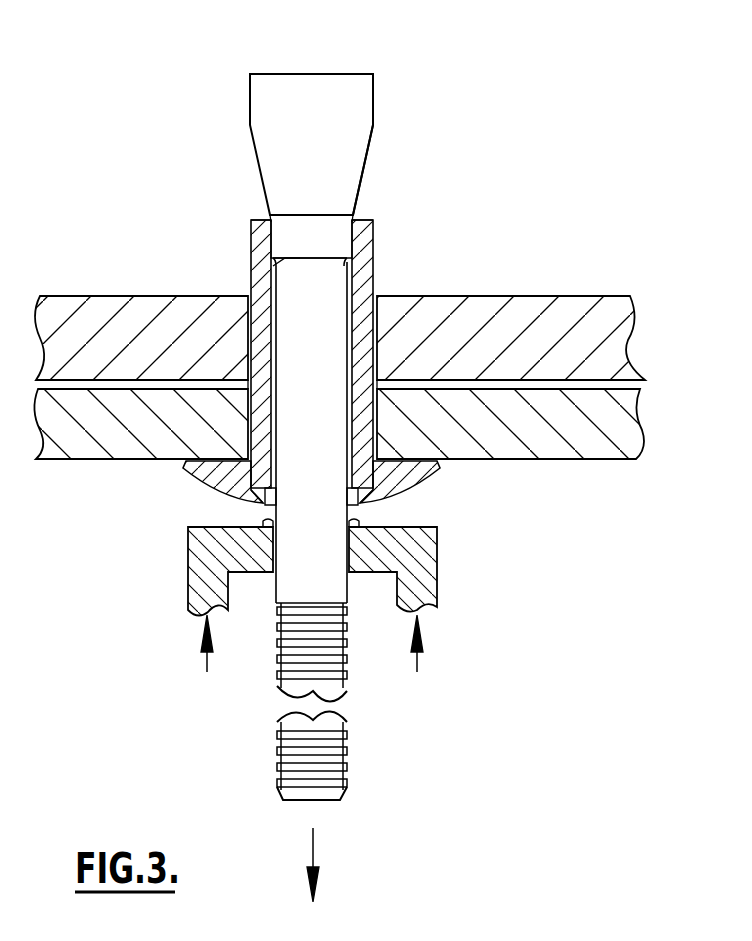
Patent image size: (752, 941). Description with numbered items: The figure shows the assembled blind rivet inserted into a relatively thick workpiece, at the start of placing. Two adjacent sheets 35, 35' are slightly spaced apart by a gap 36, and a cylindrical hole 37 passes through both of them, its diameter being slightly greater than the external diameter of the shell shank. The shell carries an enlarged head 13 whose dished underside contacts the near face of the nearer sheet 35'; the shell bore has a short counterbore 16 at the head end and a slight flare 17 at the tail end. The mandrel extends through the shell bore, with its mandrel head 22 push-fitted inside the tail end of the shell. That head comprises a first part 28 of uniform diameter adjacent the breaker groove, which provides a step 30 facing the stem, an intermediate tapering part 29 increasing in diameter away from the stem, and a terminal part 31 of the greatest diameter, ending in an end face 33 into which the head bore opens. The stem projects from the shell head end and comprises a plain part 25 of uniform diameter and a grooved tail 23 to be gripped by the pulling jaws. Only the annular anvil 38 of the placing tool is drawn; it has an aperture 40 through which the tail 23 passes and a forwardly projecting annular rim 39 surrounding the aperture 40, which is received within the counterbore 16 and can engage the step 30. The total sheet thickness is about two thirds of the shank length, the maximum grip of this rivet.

The head 13 is at (413, 472).
The counterbore 16 is at (400, 488).
The flare 17 is at (268, 220).
The mandrel head 22 is at (343, 156).
The tail 23 is at (277, 752).
The plain part 25 is at (290, 511).
The first part 28 is at (330, 230).
The intermediate tapering part 29 is at (362, 190).
The step 30 is at (290, 262).
The terminal part 31 is at (373, 103).
The end face 33 is at (352, 74).
The sheet 35 is at (340, 311).
The sheet 35' is at (339, 454).
The gap 36 is at (598, 386).
The hole 37 is at (378, 298).
The anvil 38 is at (420, 553).
The rim 39 is at (360, 525).
The aperture 40 is at (352, 562).